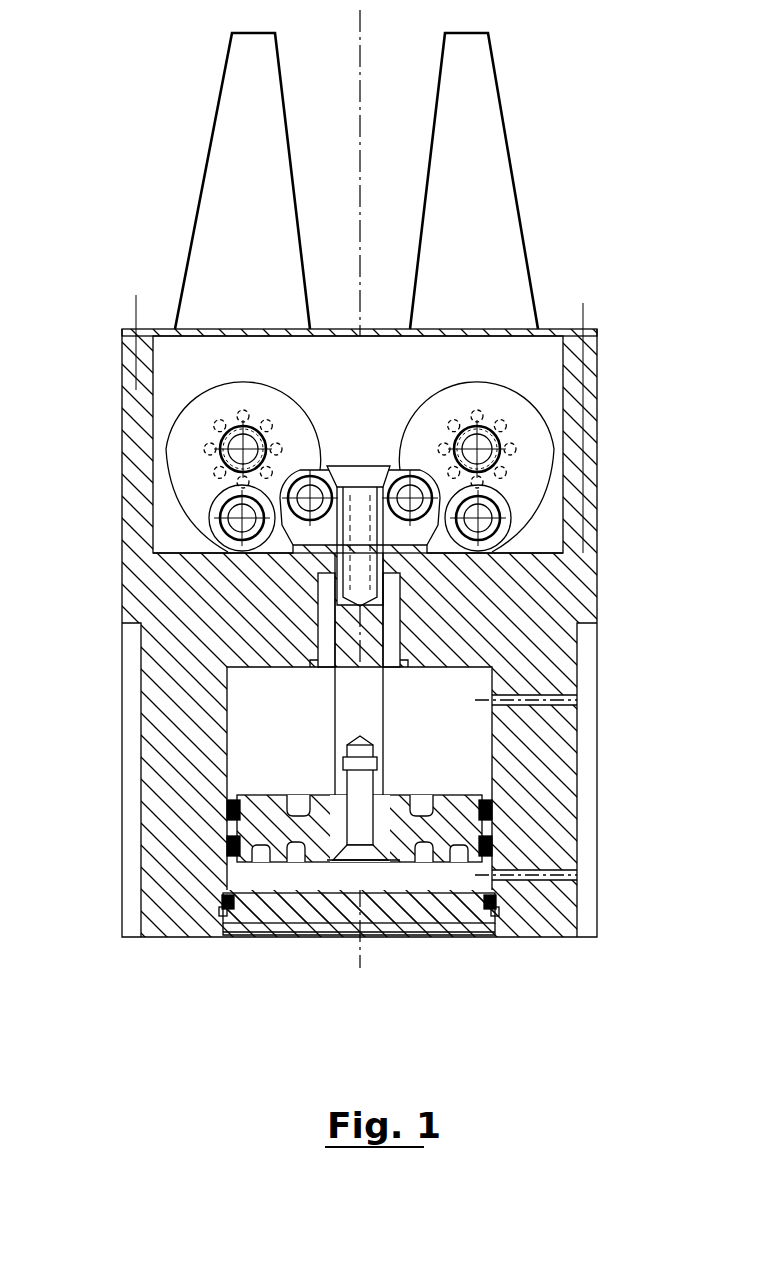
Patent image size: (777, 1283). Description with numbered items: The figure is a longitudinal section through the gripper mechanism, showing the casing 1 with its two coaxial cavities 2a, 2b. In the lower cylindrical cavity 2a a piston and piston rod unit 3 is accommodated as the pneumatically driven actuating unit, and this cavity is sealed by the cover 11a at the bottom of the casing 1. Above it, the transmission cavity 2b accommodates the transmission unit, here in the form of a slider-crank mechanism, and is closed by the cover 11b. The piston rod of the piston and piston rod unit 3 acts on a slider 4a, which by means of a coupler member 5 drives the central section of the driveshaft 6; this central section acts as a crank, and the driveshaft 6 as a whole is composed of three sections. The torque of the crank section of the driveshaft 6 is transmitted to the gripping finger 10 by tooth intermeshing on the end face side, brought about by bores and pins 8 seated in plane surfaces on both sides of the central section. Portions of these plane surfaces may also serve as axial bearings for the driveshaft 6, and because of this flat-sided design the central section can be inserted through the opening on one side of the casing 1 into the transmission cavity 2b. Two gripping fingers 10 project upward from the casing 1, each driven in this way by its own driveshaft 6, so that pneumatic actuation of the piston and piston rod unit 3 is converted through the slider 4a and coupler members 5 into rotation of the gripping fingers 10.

The casing 1 is at (136, 585).
The cylindrical cavity 2a is at (445, 730).
The transmission cavity 2b is at (540, 330).
The piston and piston rod unit 3 is at (347, 700).
The slider 4a is at (320, 465).
The coupler member 5 is at (510, 500).
The driveshaft 6 is at (525, 430).
The pins 8 is at (205, 447).
The gripping finger 10 is at (473, 157).
The cover 11a is at (280, 930).
The cover 11b is at (155, 327).